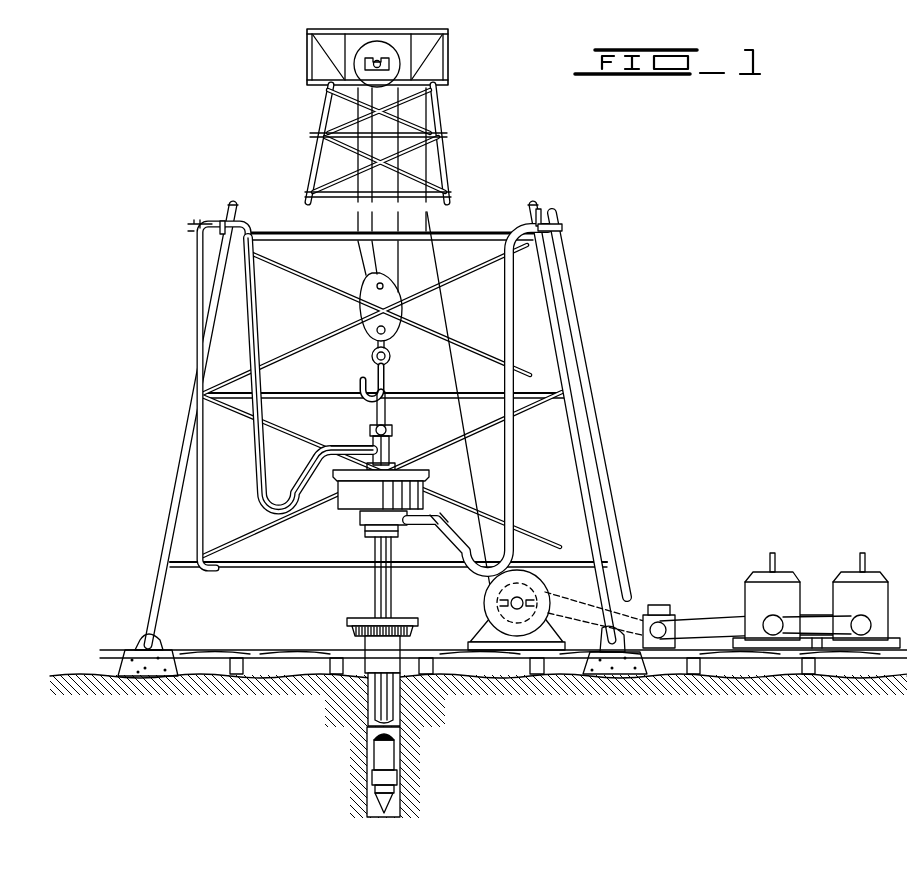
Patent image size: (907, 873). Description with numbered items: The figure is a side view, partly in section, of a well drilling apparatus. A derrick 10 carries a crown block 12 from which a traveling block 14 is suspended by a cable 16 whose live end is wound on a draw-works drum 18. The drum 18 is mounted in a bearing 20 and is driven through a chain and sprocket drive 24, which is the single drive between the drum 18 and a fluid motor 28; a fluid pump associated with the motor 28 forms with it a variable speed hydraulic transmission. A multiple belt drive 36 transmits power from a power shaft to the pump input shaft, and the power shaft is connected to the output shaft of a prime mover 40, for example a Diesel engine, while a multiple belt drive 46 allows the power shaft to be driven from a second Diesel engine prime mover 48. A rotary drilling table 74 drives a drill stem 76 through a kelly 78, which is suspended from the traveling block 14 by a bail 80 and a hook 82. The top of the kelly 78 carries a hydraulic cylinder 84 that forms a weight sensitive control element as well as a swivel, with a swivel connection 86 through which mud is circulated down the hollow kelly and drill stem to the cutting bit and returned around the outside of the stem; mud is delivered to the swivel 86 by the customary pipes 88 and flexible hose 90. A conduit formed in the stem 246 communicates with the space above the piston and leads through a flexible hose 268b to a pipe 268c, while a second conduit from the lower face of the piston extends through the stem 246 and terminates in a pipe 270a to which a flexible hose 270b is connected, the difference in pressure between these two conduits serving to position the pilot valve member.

The derrick 10 is at (370, 340).
The crown block 12 is at (398, 70).
The traveling block 14 is at (375, 307).
The cable 16 is at (446, 322).
The draw-works drum 18 is at (518, 610).
The bearing 20 is at (505, 603).
The chain and sprocket drive 24 is at (604, 612).
The fluid motor 28 is at (683, 613).
The multiple belt drive 36 is at (702, 622).
The prime mover 40 is at (772, 596).
The multiple belt drive 46 is at (812, 616).
The second Diesel engine prime mover 48 is at (860, 596).
The rotary drilling table 74 is at (358, 616).
The drill stem 76 is at (381, 757).
The kelly 78 is at (392, 600).
The bail 80 is at (386, 421).
The hook 82 is at (386, 381).
The hydraulic cylinder 84 is at (358, 492).
The swivel connection 86 is at (393, 518).
The pipes 88 is at (606, 473).
The flexible hose 90 is at (516, 512).
The stem 246 is at (390, 454).
The flexible hose 268b is at (290, 374).
The pipe 268c is at (200, 288).
The pipe 270a is at (357, 451).
The flexible hose 270b is at (268, 426).